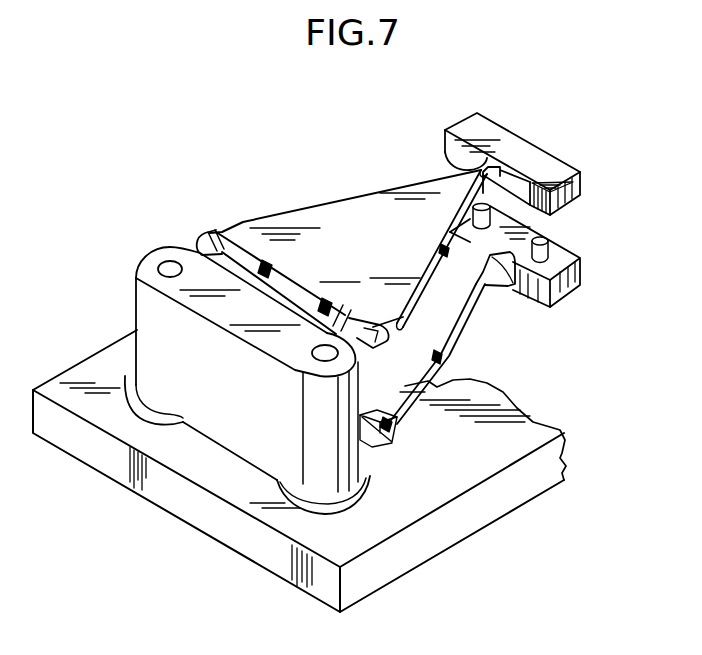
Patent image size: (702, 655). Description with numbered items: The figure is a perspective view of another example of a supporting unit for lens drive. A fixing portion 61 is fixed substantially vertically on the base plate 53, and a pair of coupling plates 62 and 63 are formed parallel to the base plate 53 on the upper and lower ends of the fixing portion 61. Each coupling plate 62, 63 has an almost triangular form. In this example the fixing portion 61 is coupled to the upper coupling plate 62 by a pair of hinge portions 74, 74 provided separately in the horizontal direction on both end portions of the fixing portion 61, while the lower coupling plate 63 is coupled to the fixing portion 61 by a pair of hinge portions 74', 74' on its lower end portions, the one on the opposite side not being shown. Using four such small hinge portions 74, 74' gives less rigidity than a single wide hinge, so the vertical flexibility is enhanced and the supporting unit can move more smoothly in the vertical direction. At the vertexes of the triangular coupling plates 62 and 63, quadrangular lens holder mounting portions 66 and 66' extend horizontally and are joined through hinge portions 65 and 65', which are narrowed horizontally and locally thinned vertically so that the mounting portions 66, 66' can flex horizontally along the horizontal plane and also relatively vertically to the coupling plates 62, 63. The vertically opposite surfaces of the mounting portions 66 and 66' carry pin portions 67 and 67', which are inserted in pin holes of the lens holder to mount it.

The base plate 53 is at (115, 450).
The fixing portion 61 is at (150, 342).
The coupling plate 62 is at (362, 217).
The coupling plate 63 is at (444, 345).
The hinge portion 65 is at (440, 151).
The hinge portion 65' is at (499, 299).
The lens holder mounting portion 66 is at (552, 164).
The lens holder mounting portion 66' is at (556, 258).
The pin portion 67 is at (559, 201).
The pin portion 67' is at (591, 245).
The hinge portion 74 is at (289, 257).
The hinge portion 74' is at (410, 436).